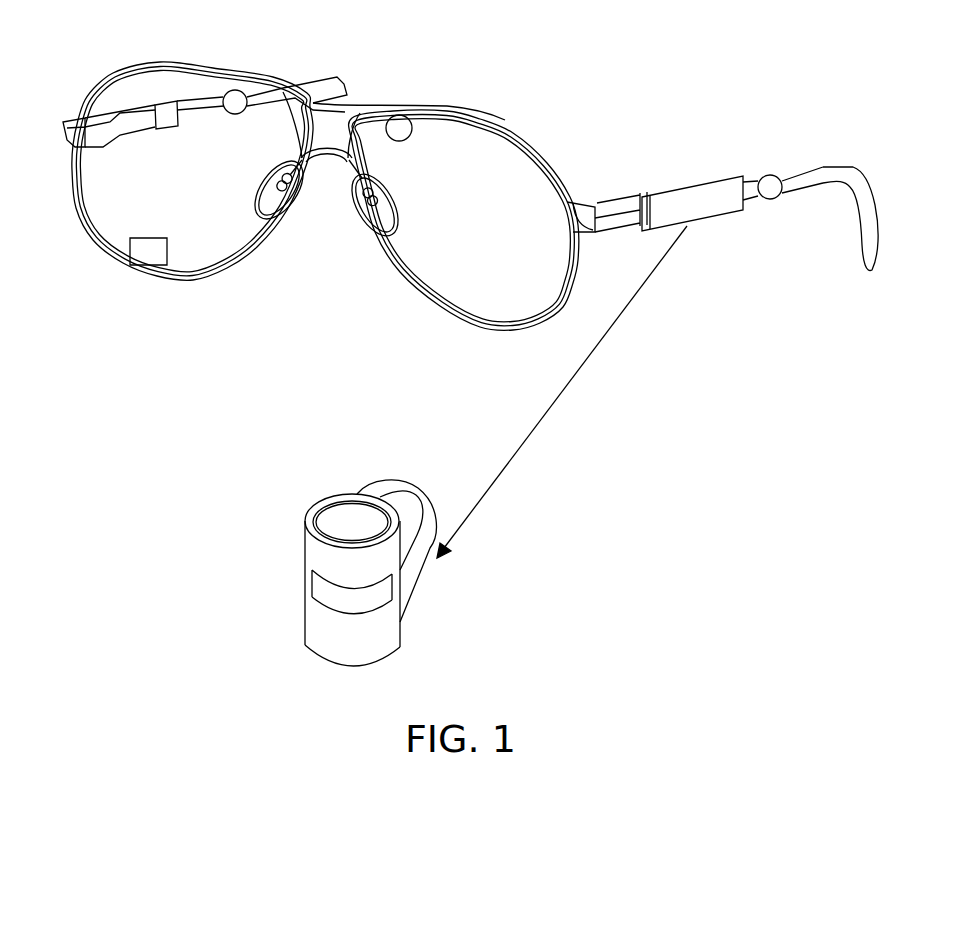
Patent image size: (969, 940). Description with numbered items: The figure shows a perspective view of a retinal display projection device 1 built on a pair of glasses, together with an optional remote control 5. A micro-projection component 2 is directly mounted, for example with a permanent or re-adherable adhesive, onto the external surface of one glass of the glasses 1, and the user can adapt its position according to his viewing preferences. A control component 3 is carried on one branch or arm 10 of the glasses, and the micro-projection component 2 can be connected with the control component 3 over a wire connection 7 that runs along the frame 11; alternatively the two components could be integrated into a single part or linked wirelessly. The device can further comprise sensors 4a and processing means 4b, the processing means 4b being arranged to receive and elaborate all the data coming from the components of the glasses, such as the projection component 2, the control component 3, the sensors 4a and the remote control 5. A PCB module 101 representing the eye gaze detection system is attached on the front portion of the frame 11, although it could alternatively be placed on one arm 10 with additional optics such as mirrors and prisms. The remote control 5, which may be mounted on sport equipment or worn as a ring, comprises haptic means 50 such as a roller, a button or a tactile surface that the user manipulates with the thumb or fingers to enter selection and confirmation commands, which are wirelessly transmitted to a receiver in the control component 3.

The retinal display projection device 1 is at (93, 289).
The micro-projection component 2 is at (401, 117).
The control component 3 is at (678, 185).
The sensors 4a is at (240, 92).
The processing means 4b is at (170, 104).
The remote control 5 is at (317, 626).
The wire connection 7 is at (491, 121).
The branch/arm 10 is at (817, 188).
The frame 11 is at (292, 86).
The haptic means 50 is at (323, 585).
The PCB module 101 is at (150, 268).